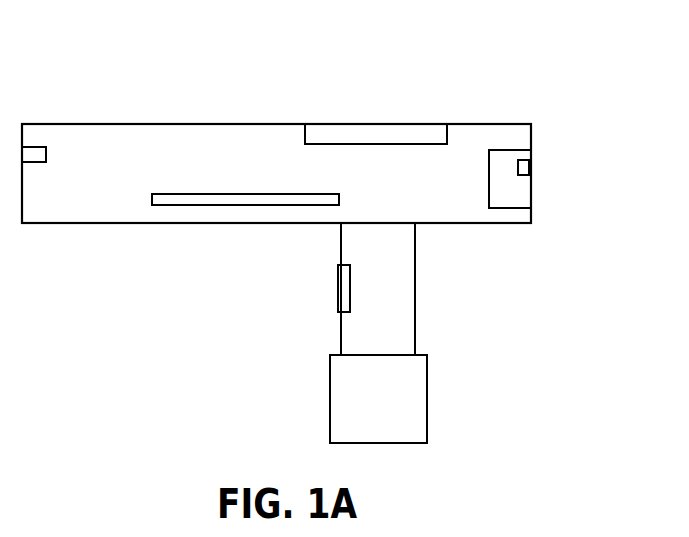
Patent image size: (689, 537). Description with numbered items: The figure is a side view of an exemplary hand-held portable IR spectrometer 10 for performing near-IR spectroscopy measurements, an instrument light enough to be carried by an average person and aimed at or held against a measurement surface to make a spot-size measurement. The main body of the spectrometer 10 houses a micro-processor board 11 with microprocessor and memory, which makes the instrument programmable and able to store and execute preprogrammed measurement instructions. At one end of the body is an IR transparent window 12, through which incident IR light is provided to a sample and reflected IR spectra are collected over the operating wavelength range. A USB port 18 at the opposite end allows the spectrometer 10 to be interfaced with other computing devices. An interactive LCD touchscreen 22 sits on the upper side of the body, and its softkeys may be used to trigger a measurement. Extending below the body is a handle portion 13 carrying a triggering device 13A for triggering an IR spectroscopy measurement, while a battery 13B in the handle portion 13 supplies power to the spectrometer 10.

The portable IR spectrometer 10 is at (230, 108).
The micro-processor board 11 is at (193, 197).
The IR transparent window 12 is at (33, 152).
The handle portion 13 is at (395, 290).
The triggering device 13A is at (343, 289).
The battery 13B is at (408, 400).
The USB port 18 is at (530, 164).
The interactive LCD touchscreen 22 is at (378, 137).